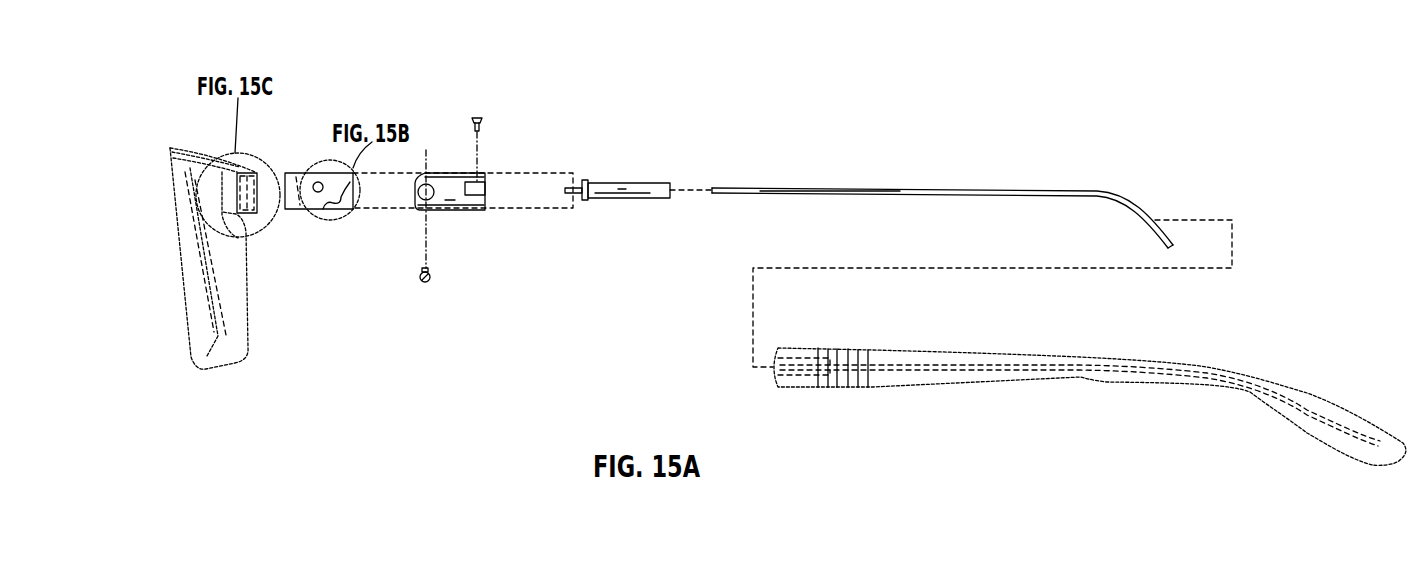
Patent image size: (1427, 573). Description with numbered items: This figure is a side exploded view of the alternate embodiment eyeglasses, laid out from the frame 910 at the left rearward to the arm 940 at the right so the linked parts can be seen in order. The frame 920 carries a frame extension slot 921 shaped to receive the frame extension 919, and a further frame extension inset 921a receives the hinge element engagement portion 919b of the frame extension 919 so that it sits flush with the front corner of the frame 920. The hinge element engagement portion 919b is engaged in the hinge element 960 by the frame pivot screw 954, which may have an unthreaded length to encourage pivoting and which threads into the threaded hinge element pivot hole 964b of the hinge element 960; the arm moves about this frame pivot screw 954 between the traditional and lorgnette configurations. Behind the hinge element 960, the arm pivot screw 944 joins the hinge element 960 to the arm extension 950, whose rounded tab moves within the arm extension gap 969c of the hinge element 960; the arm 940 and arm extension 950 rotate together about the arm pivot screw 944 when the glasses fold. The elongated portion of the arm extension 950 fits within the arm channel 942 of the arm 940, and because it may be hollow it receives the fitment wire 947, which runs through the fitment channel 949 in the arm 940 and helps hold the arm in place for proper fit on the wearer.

The frame 910 is at (205, 153).
The frame 920 is at (182, 247).
The frame extension slot 921 is at (257, 187).
The frame extension inset 921a is at (253, 197).
The frame extension 919 is at (303, 217).
The hinge element engagement portion 919b is at (293, 187).
The arm pivot screw 944 is at (475, 117).
The threaded hinge element pivot hole 964b is at (428, 189).
The hinge element 960 is at (448, 213).
The arm extension gap 969c is at (481, 190).
The frame pivot screw 954 is at (420, 280).
The arm extension 950 is at (660, 183).
The fitment wire 947 is at (917, 190).
The arm channel 942 is at (805, 360).
The fitment channel 949 is at (1043, 370).
The arm 940 is at (1307, 393).